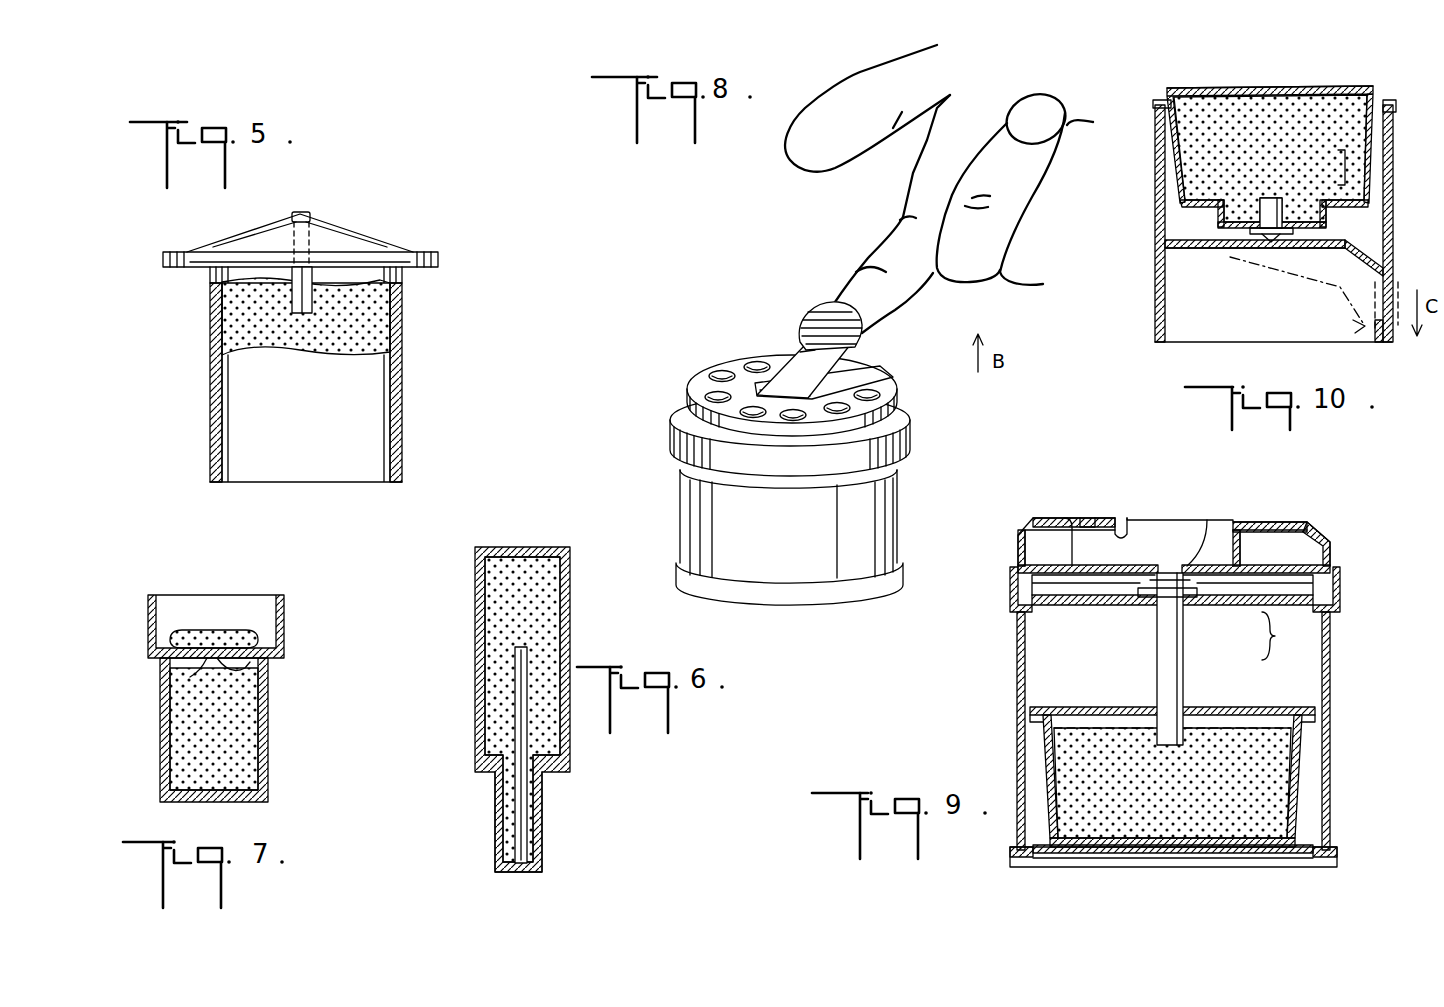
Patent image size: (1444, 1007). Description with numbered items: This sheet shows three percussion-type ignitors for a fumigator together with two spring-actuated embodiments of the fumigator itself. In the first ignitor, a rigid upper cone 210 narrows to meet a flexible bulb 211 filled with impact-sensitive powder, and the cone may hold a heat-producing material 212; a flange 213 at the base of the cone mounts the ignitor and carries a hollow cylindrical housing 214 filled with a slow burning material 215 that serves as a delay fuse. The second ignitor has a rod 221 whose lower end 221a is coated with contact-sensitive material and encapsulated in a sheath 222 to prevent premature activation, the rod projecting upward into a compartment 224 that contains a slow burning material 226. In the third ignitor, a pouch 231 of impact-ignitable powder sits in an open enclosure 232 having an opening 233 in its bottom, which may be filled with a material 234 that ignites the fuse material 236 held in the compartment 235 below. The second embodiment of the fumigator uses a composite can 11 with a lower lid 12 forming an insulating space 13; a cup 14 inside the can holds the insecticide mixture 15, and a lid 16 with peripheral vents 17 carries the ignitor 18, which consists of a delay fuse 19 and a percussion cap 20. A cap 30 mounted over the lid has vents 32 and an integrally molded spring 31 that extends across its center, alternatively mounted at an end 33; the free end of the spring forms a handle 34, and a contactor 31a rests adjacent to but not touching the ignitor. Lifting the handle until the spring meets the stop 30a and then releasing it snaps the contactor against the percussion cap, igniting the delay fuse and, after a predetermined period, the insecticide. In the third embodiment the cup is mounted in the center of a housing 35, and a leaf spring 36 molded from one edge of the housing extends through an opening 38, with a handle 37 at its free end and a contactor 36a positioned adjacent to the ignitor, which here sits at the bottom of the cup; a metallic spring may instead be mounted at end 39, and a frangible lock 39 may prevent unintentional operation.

In FIG. 8, the can 11 is at (688, 490).
In FIG. 9, the can 11 is at (1018, 690).
In FIG. 9, the lower lid 12 is at (1337, 855).
In FIG. 9, the space 13 is at (1290, 862).
In FIG. 10, the space 13 is at (1175, 328).
In FIG. 9, the cup 14 is at (1292, 744).
In FIG. 10, the cup 14 is at (1174, 163).
In FIG. 9, the insecticide mixture 15 is at (1268, 773).
In FIG. 10, the insecticide mixture 15 is at (1195, 175).
In FIG. 9, the lid 16 is at (1040, 606).
In FIG. 10, the lid 16 is at (1170, 100).
In FIG. 9, the vents 17 is at (1063, 607).
In FIG. 10, the vents 17 is at (1197, 90).
In FIG. 5, the ignitor 18 is at (146, 364).
In FIG. 9, the ignitor 18 is at (1300, 650).
In FIG. 10, the ignitor 18 is at (1368, 181).
In FIG. 9, the delay fuse 19 is at (1186, 655).
In FIG. 10, the delay fuse 19 is at (1283, 213).
In FIG. 9, the percussion cap 20 is at (1205, 594).
In FIG. 10, the percussion cap 20 is at (1284, 227).
In FIG. 8, the cap 30 is at (907, 414).
In FIG. 9, the cap 30 is at (1025, 545).
In FIG. 9, the stop 30a is at (1125, 540).
In FIG. 8, the spring 31 is at (880, 368).
In FIG. 9, the spring 31 is at (1070, 525).
In FIG. 9, the contactor 31a is at (1208, 520).
In FIG. 8, the vents 32 is at (750, 364).
In FIG. 9, the vents 32 is at (1083, 518).
In FIG. 9, the end 33 is at (1047, 560).
In FIG. 8, the handle 34 is at (808, 318).
In FIG. 9, the handle 34 is at (1270, 522).
In FIG. 10, the housing 35 is at (1387, 135).
In FIG. 10, the leaf spring 36 is at (1225, 250).
In FIG. 10, the contactor 36a is at (1272, 250).
In FIG. 10, the handle 37 is at (1385, 275).
In FIG. 10, the opening 38 is at (1393, 247).
In FIG. 10, the end 39 is at (1393, 332).
In FIG. 5, the upper cone 210 is at (365, 237).
In FIG. 5, the bulb 211 is at (306, 212).
In FIG. 5, the material 212 is at (255, 232).
In FIG. 5, the flange 213 is at (440, 258).
In FIG. 5, the cylindrical housing 214 is at (398, 428).
In FIG. 5, the slow burning material 215 is at (370, 330).
In FIG. 6, the rod 221 is at (520, 703).
In FIG. 6, the lower end 221a is at (528, 822).
In FIG. 6, the sheath 222 is at (497, 830).
In FIG. 6, the compartment 224 is at (480, 628).
In FIG. 6, the slow burning material 226 is at (497, 577).
In FIG. 7, the pouch 231 is at (238, 632).
In FIG. 7, the open enclosure 232 is at (284, 615).
In FIG. 7, the opening 233 is at (245, 668).
In FIG. 7, the material 234 is at (190, 677).
In FIG. 7, the compartment 235 is at (268, 725).
In FIG. 7, the fuse material 236 is at (240, 772).